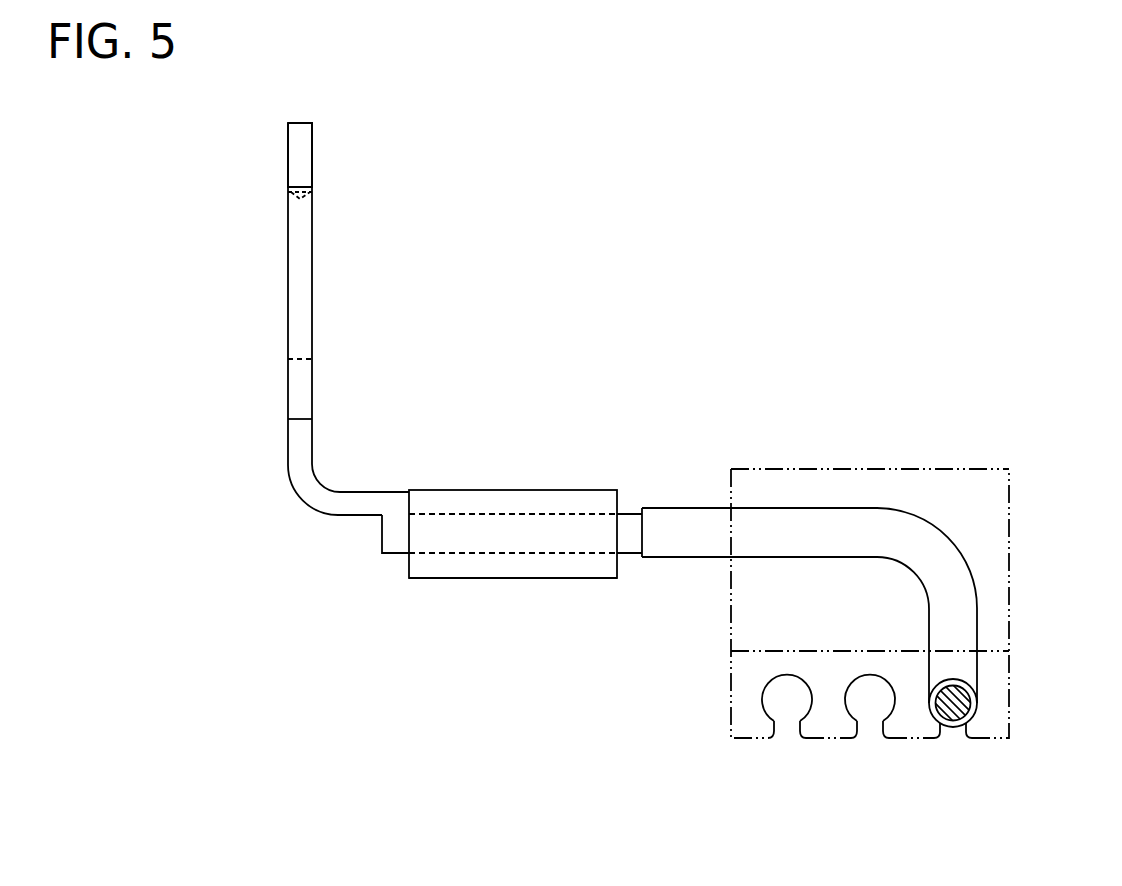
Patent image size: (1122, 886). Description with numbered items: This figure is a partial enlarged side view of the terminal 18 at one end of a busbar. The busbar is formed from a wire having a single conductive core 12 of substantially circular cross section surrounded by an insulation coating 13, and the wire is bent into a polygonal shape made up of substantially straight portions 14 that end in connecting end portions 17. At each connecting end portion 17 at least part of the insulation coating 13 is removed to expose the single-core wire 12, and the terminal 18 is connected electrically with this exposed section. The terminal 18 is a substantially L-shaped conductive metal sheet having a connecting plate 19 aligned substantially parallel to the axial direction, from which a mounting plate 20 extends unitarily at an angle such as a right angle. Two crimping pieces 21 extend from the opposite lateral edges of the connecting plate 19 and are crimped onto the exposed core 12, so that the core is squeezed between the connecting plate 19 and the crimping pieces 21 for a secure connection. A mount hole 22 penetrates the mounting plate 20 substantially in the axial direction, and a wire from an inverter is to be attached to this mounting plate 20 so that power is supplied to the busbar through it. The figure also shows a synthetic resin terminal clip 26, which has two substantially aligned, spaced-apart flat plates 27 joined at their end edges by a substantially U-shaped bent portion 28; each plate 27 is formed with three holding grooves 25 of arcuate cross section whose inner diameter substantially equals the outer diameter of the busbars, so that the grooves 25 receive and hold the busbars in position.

The single conductive core 12 is at (399, 546).
The insulation coating 13 is at (668, 515).
The straight portion 14 is at (953, 713).
The connecting end portion 17 is at (757, 524).
The terminal 18 is at (343, 217).
The connecting plate 19 is at (481, 498).
The mounting plate 20 is at (302, 147).
The crimping piece 21 is at (540, 567).
The mount hole 22 is at (290, 200).
The holding groove 25 is at (787, 723).
The terminal clip 26 is at (913, 582).
The flat plate 27 is at (892, 651).
The U-shaped bent portion 28 is at (888, 470).